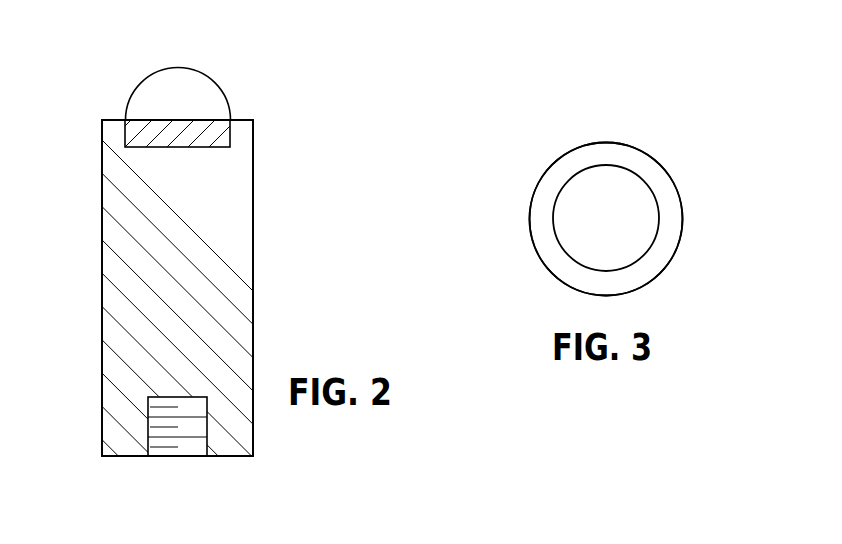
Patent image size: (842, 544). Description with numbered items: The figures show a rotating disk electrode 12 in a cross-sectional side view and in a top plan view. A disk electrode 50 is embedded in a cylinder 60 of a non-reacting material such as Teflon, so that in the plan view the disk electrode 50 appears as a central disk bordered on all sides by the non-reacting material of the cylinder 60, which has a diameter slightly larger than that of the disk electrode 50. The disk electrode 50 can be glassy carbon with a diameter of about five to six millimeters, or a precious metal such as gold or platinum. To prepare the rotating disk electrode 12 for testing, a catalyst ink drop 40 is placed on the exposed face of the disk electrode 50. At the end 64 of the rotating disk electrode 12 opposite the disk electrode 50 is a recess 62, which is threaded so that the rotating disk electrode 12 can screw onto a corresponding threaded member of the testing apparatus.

In FIG. 2, the rotating disk electrode 12 is at (66, 155).
In FIG. 3, the rotating disk electrode 12 is at (493, 216).
In FIG. 2, the catalyst ink drop 40 is at (178, 67).
In FIG. 2, the disk electrode 50 is at (215, 133).
In FIG. 3, the disk electrode 50 is at (617, 245).
In FIG. 2, the cylinder 60 is at (225, 295).
In FIG. 3, the cylinder 60 is at (670, 222).
In FIG. 2, the recess 62 is at (178, 440).
In FIG. 2, the end 64 is at (128, 457).